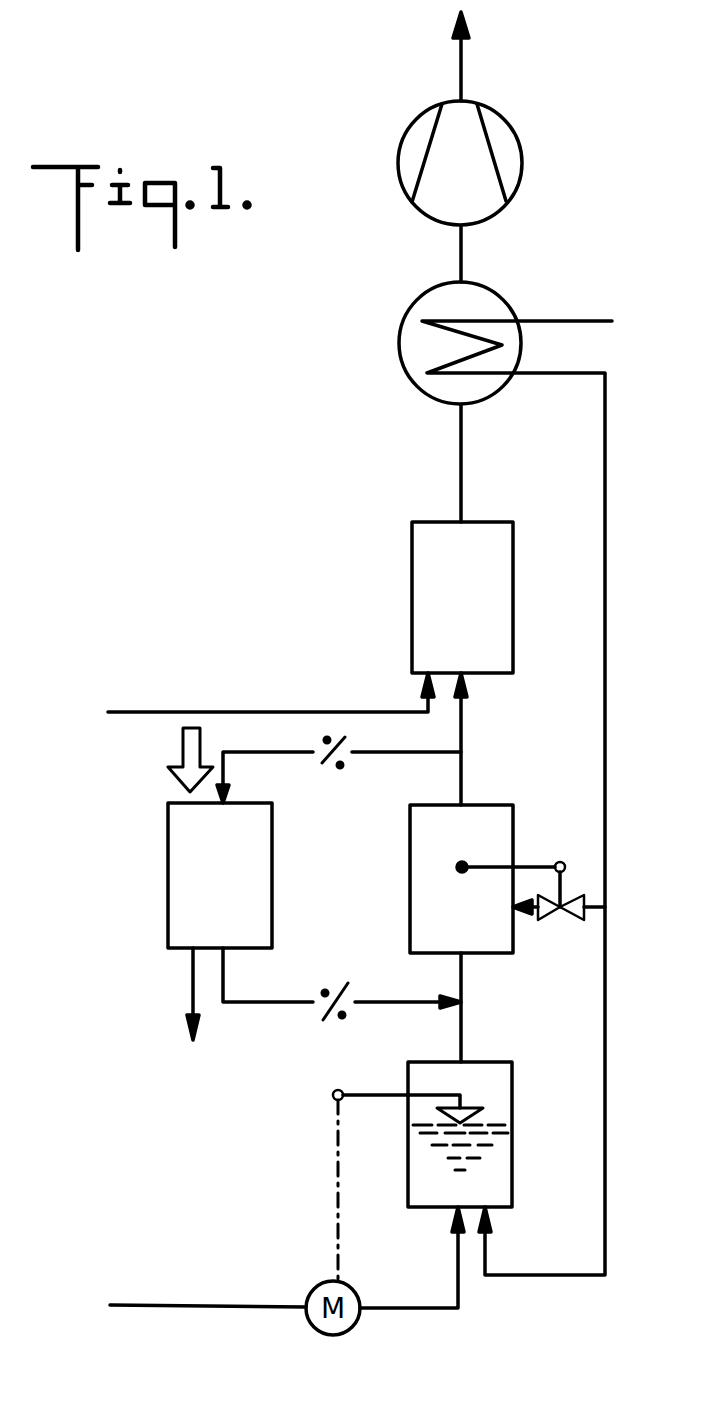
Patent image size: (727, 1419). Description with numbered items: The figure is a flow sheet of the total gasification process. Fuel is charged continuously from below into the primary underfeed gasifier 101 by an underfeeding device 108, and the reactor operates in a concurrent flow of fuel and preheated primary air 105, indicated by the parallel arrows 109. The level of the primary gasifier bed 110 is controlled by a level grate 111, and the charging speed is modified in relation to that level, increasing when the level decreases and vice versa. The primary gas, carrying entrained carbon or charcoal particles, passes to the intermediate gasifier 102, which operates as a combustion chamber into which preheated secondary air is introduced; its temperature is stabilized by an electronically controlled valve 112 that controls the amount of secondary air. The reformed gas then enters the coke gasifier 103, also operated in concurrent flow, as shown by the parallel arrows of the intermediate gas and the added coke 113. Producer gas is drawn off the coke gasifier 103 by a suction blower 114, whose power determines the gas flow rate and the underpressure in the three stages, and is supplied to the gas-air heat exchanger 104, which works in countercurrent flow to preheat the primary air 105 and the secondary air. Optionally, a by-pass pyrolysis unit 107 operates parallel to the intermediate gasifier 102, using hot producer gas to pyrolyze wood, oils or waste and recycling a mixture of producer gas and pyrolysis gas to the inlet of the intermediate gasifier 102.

The primary underfeed gasifier 101 is at (490, 1167).
The intermediate gasifier 102 is at (505, 817).
The coke gasifier 103 is at (418, 533).
The heat exchanger 104 is at (500, 298).
The primary air 105 is at (535, 1280).
The by-pass pyrolysis unit 107 is at (178, 865).
The underfeeding device 108 is at (217, 1305).
The parallel arrows 109 is at (467, 1250).
The primary gasifier bed 110 is at (422, 1165).
The level grate 111 is at (370, 1087).
The electronically controlled valve 112 is at (563, 883).
The coke 113 is at (238, 717).
The suction blower 114 is at (505, 152).